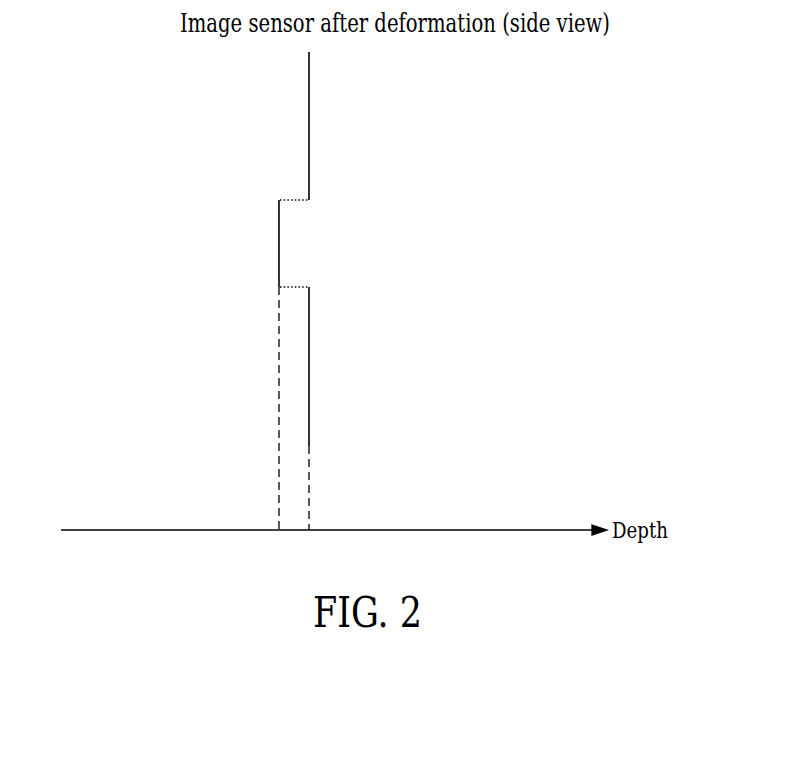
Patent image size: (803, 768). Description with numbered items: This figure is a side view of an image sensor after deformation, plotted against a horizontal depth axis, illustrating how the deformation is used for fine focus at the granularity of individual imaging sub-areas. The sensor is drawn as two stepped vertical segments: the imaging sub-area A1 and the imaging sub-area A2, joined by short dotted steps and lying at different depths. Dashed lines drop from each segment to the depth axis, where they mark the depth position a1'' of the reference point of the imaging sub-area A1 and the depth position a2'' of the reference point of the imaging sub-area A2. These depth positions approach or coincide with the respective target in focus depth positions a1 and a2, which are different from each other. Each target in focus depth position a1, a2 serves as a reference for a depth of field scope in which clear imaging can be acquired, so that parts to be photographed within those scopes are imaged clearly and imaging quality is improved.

The imaging sub-area A1 is at (265, 241).
The imaging sub-area A2 is at (294, 143).
The target in focus depth position a1 is at (252, 427).
The target in focus depth position a2 is at (341, 506).